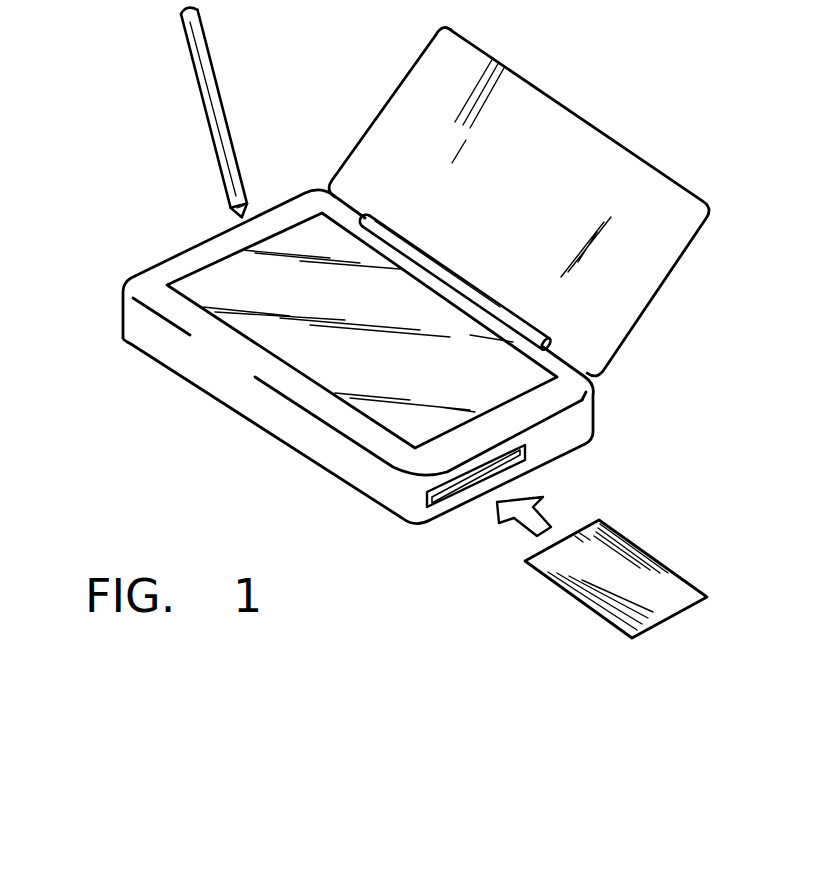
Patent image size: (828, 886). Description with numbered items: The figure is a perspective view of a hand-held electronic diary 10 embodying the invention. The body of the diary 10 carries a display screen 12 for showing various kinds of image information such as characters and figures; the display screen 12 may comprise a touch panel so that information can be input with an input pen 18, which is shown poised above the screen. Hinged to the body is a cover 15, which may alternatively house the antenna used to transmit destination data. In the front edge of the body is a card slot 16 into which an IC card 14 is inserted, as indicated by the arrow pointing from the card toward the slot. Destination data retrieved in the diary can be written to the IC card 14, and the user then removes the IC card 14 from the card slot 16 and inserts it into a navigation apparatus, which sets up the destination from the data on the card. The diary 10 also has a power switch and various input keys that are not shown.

The electronic diary 10 is at (140, 184).
The display screen 12 is at (302, 230).
The IC card 14 is at (647, 575).
The cover 15 is at (650, 285).
The card slot 16 is at (450, 492).
The input pen 18 is at (208, 38).